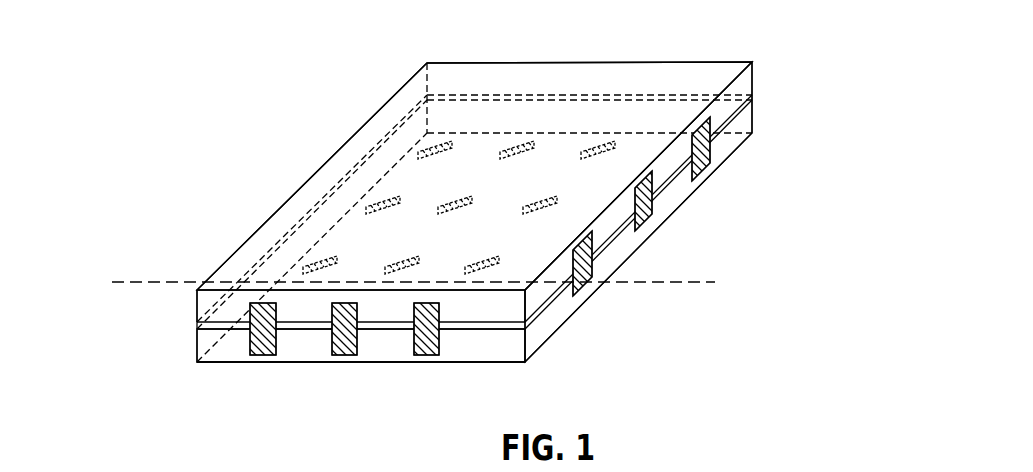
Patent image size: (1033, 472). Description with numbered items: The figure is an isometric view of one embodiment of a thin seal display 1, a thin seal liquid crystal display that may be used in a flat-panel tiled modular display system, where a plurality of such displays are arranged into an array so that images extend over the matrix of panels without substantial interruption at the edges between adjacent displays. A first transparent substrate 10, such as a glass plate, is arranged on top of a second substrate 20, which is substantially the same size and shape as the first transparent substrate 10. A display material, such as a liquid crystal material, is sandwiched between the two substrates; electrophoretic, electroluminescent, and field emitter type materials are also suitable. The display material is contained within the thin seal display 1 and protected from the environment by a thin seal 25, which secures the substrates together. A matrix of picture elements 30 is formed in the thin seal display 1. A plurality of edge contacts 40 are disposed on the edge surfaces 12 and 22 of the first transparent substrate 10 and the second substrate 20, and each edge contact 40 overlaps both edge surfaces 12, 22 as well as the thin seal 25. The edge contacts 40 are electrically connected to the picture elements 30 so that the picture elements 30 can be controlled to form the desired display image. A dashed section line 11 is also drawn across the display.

The thin seal display 1 is at (340, 47).
The first transparent substrate 10 is at (232, 256).
The section line 11 is at (139, 285).
The edge surface of first substrate 12 is at (535, 293).
The second substrate 20 is at (213, 366).
The edge surface of second substrate 22 is at (495, 350).
The thin seal 25 is at (198, 323).
The picture elements 30 is at (340, 171).
The edge contacts 40 is at (261, 357).